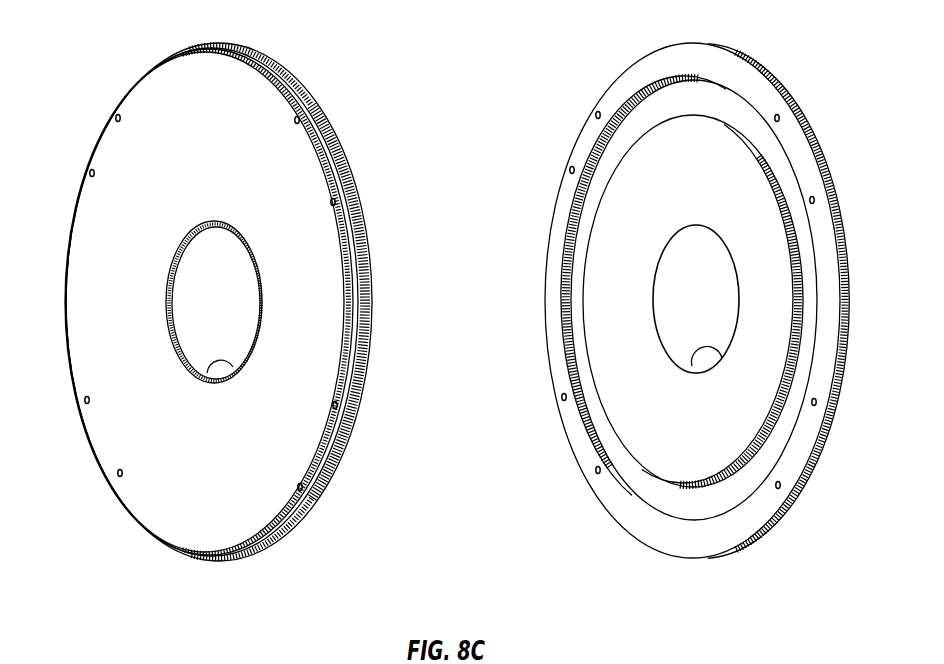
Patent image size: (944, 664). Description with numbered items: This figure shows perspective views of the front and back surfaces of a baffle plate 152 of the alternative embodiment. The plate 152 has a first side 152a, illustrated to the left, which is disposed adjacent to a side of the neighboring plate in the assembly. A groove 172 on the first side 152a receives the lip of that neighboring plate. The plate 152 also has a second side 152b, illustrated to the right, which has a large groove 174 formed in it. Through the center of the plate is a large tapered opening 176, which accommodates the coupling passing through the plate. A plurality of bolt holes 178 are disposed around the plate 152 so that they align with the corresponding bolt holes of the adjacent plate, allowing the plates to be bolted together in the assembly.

The plate 152 is at (104, 29).
The first side 152a is at (244, 217).
The second side 152b is at (725, 214).
The groove 172 is at (218, 289).
The large groove 174 is at (697, 304).
The large tapered opening 176 is at (207, 368).
The bolt holes 178 is at (294, 119).